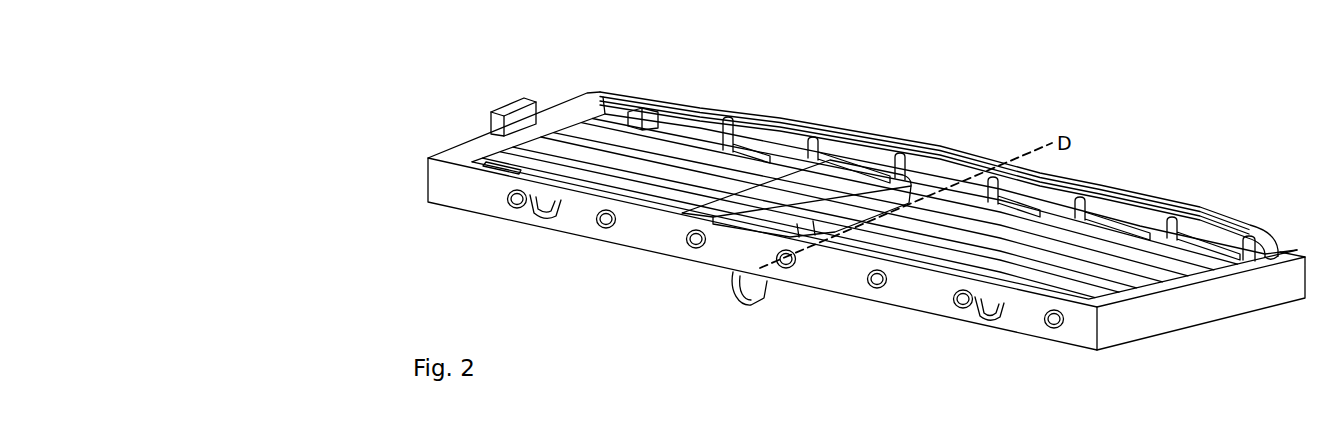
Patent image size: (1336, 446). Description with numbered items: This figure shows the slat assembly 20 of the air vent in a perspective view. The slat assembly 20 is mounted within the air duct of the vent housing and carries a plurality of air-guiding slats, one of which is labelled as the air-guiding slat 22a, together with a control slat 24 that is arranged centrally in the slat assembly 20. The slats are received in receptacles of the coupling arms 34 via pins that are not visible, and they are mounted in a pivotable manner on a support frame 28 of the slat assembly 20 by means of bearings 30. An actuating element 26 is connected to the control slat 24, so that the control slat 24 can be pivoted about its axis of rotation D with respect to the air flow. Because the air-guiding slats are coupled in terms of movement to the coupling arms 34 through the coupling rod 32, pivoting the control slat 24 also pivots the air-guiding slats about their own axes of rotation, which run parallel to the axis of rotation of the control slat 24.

The slat assembly 20 is at (1152, 140).
The floor ribs / receiving channels 22a is at (662, 147).
The control slat 24 is at (880, 240).
The actuating element 26 is at (747, 297).
The support frame 28 is at (588, 112).
The bearings 30 is at (597, 220).
The coupling rod 32 is at (965, 160).
The coupling arms 34 is at (812, 142).